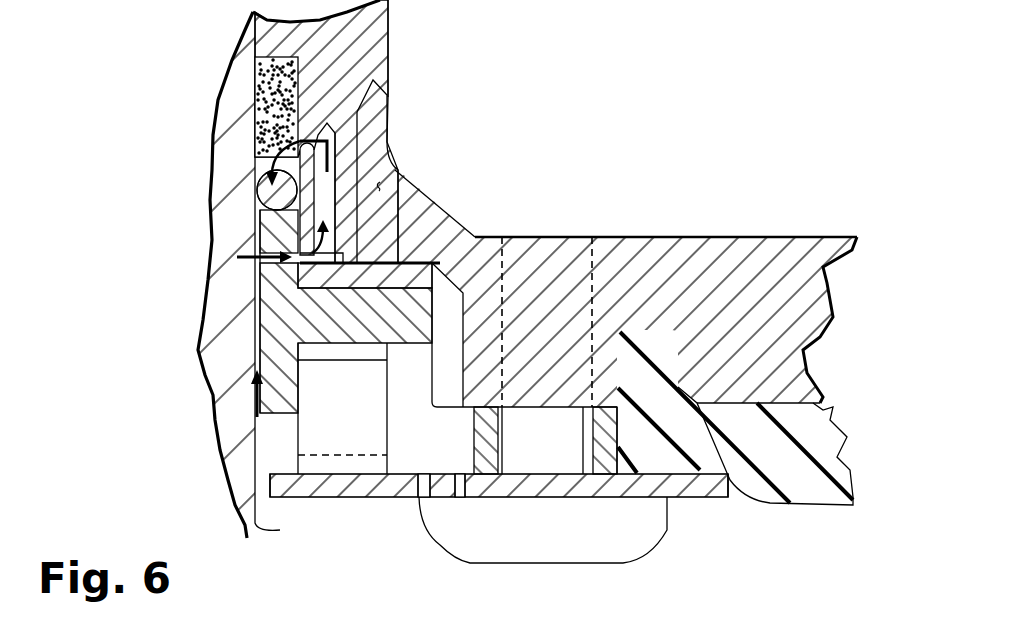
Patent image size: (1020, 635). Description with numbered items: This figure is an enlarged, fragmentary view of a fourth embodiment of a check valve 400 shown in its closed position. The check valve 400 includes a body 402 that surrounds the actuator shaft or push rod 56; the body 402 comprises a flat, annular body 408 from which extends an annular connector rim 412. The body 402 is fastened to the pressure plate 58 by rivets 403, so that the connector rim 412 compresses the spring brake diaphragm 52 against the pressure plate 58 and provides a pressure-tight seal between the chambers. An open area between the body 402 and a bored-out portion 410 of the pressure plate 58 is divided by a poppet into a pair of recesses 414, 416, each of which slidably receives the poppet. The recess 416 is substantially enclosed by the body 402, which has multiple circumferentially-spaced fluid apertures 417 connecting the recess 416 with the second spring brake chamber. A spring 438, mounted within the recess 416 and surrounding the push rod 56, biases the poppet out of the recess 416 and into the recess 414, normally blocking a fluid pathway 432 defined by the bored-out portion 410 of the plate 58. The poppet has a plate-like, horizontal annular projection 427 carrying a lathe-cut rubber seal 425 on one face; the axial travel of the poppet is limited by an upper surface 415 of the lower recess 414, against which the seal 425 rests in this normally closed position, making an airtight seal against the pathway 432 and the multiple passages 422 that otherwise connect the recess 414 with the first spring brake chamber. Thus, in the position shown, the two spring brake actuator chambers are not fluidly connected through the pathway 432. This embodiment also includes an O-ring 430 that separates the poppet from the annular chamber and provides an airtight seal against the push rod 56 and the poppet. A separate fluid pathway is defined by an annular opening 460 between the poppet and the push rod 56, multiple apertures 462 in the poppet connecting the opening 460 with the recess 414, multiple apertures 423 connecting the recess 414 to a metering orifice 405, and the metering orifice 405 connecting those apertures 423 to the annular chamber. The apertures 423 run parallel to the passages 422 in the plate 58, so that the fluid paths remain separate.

The check valve 400 is at (552, 108).
The body 402 is at (366, 503).
The rivets 403 is at (601, 563).
The metering orifice 405 is at (302, 140).
The flat annular body 408 is at (292, 480).
The bored-out portion 410 is at (463, 302).
The annular connector rim 412 is at (705, 493).
The recess 414 is at (396, 212).
The upper surface 415 is at (409, 253).
The recess 416 is at (405, 465).
The fluid apertures 417 is at (458, 488).
The passages 422 is at (395, 172).
The apertures 423 is at (350, 170).
The rubber seal 425 is at (505, 240).
The annular projection 427 is at (323, 308).
The O-ring 430 is at (268, 192).
The fluid pathway 432 is at (447, 390).
The spring 438 is at (347, 460).
The annular opening 460 is at (248, 380).
The apertures 462 is at (250, 228).
The spring brake diaphragm 52 is at (805, 493).
The push rod 56 is at (212, 338).
The pressure plate 58 is at (755, 253).